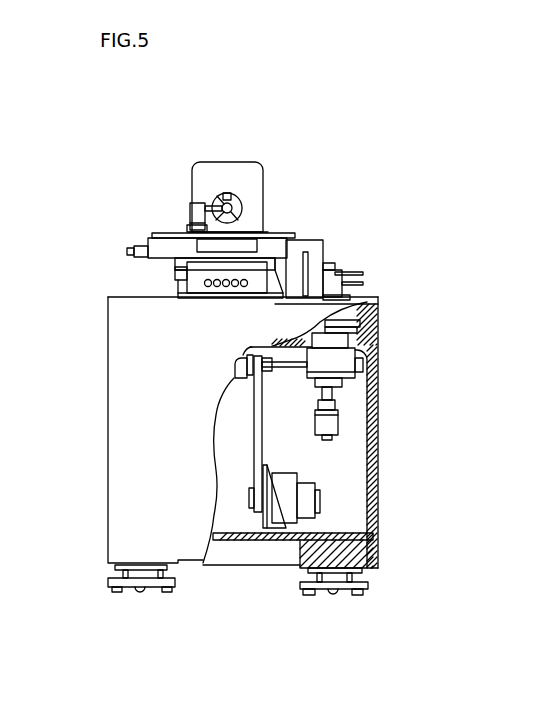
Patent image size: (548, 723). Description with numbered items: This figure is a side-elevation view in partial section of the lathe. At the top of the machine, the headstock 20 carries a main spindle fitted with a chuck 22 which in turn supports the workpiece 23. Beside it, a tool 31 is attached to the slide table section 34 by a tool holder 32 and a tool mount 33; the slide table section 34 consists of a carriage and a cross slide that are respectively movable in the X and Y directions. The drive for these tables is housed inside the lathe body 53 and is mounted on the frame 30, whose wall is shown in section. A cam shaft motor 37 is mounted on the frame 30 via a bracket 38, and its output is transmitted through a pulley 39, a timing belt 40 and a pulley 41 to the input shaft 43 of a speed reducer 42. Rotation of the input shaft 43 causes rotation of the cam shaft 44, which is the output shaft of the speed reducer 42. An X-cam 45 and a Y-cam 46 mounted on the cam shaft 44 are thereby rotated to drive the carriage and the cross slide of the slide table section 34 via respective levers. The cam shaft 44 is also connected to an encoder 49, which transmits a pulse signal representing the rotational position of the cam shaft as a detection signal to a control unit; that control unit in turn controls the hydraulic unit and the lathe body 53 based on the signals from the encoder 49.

The headstock 20 is at (252, 172).
The chuck 22 is at (227, 193).
The workpiece 23 is at (238, 207).
The tool 31 is at (209, 206).
The tool holder 32 is at (190, 204).
The tool mount 33 is at (189, 227).
The slide table section 34 is at (157, 233).
The cam shaft 44 is at (332, 290).
The X-cam 45 is at (365, 284).
The Y-cam 46 is at (363, 272).
The lathe body 53 is at (108, 340).
The frame 30 is at (375, 333).
The pulley 41 is at (235, 370).
The timing belt 40 is at (254, 435).
The pulley 39 is at (250, 498).
The cam shaft motor 37 is at (288, 495).
The bracket 38 is at (266, 502).
The speed reducer 42 is at (345, 367).
The input shaft 43 is at (335, 389).
The encoder 49 is at (335, 427).